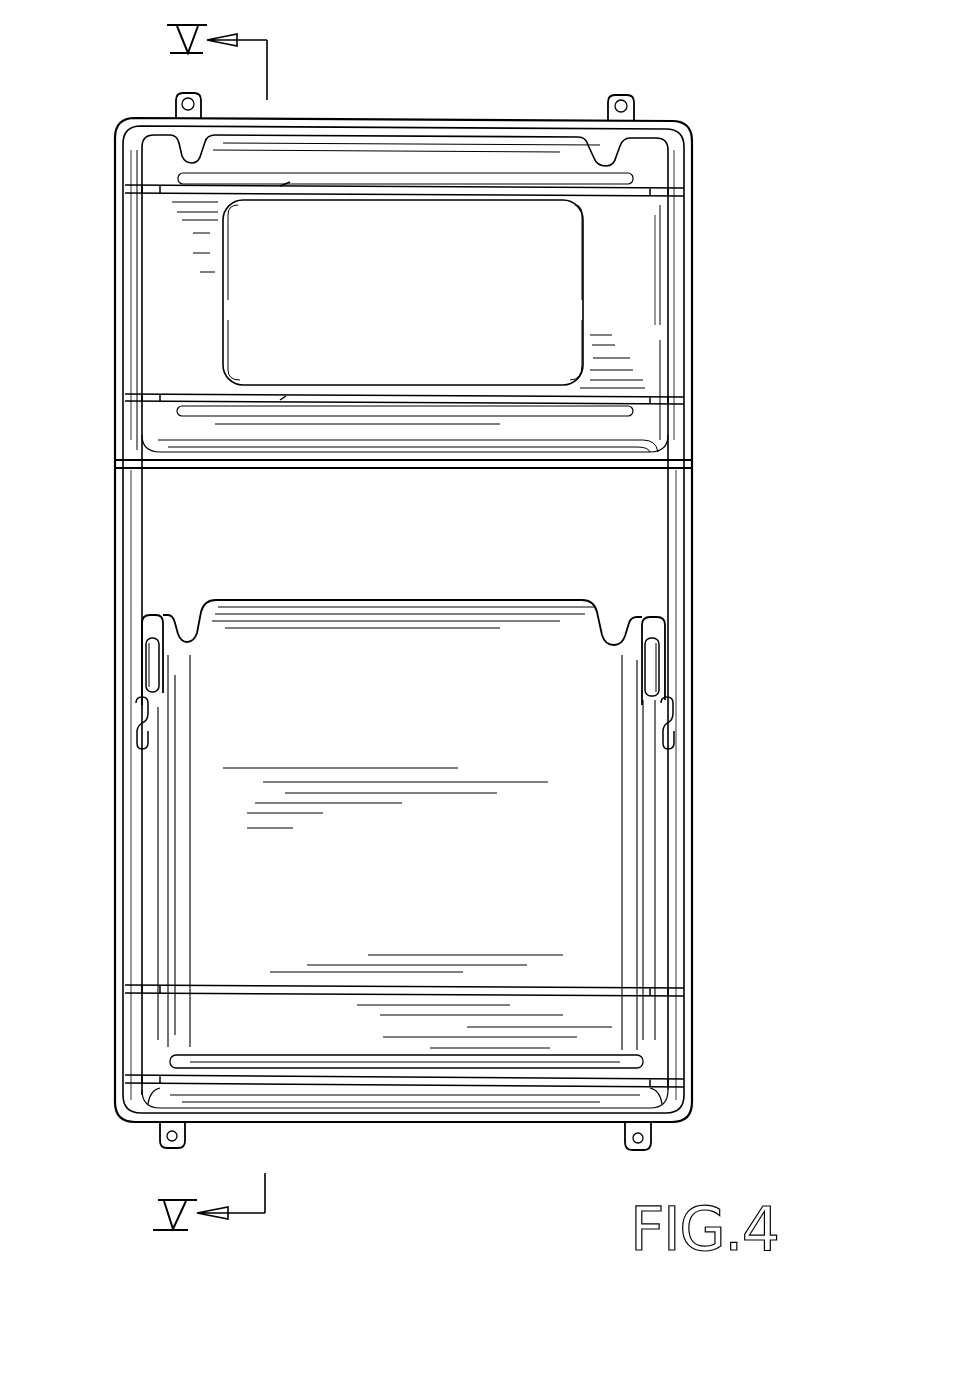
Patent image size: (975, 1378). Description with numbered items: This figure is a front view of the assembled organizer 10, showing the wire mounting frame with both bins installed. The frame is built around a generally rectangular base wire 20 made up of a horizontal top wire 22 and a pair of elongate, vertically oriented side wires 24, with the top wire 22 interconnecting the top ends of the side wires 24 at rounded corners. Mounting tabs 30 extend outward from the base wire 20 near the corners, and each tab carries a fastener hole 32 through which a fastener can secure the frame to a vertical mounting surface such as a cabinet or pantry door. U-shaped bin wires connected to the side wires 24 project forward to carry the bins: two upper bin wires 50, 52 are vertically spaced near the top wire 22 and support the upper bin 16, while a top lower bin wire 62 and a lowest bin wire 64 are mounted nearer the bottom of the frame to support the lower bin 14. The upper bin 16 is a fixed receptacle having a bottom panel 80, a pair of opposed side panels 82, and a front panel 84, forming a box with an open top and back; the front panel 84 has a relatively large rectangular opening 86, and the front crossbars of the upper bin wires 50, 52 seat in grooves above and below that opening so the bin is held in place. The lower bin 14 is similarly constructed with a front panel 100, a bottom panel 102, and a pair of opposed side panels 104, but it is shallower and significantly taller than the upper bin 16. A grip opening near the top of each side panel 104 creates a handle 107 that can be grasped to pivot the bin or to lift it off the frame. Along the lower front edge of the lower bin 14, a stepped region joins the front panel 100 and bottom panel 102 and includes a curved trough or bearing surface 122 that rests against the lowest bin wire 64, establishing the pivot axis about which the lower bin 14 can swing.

The organizer 10 is at (717, 117).
The lower bin 14 is at (580, 810).
The upper bin 16 is at (628, 253).
The base wire 20 is at (708, 498).
The top wire 22 is at (442, 120).
The side wires 24 is at (122, 540).
The mounting tabs 30 is at (178, 108).
The fastener hole 32 is at (181, 98).
The upper bin wire 50 is at (283, 187).
The upper bin wire 52 is at (283, 400).
The top lower bin wire 62 is at (218, 986).
The lower bin wire 64 is at (320, 1076).
The bottom panel 80 is at (370, 440).
The side panels 82 is at (135, 345).
The front panel 84 is at (640, 305).
The opening 86 is at (232, 283).
The front panel 100 is at (452, 642).
The bottom panel 102 is at (435, 1102).
The side panels 104 is at (150, 780).
The handle 107 is at (148, 622).
The bearing surface 122 is at (560, 1058).